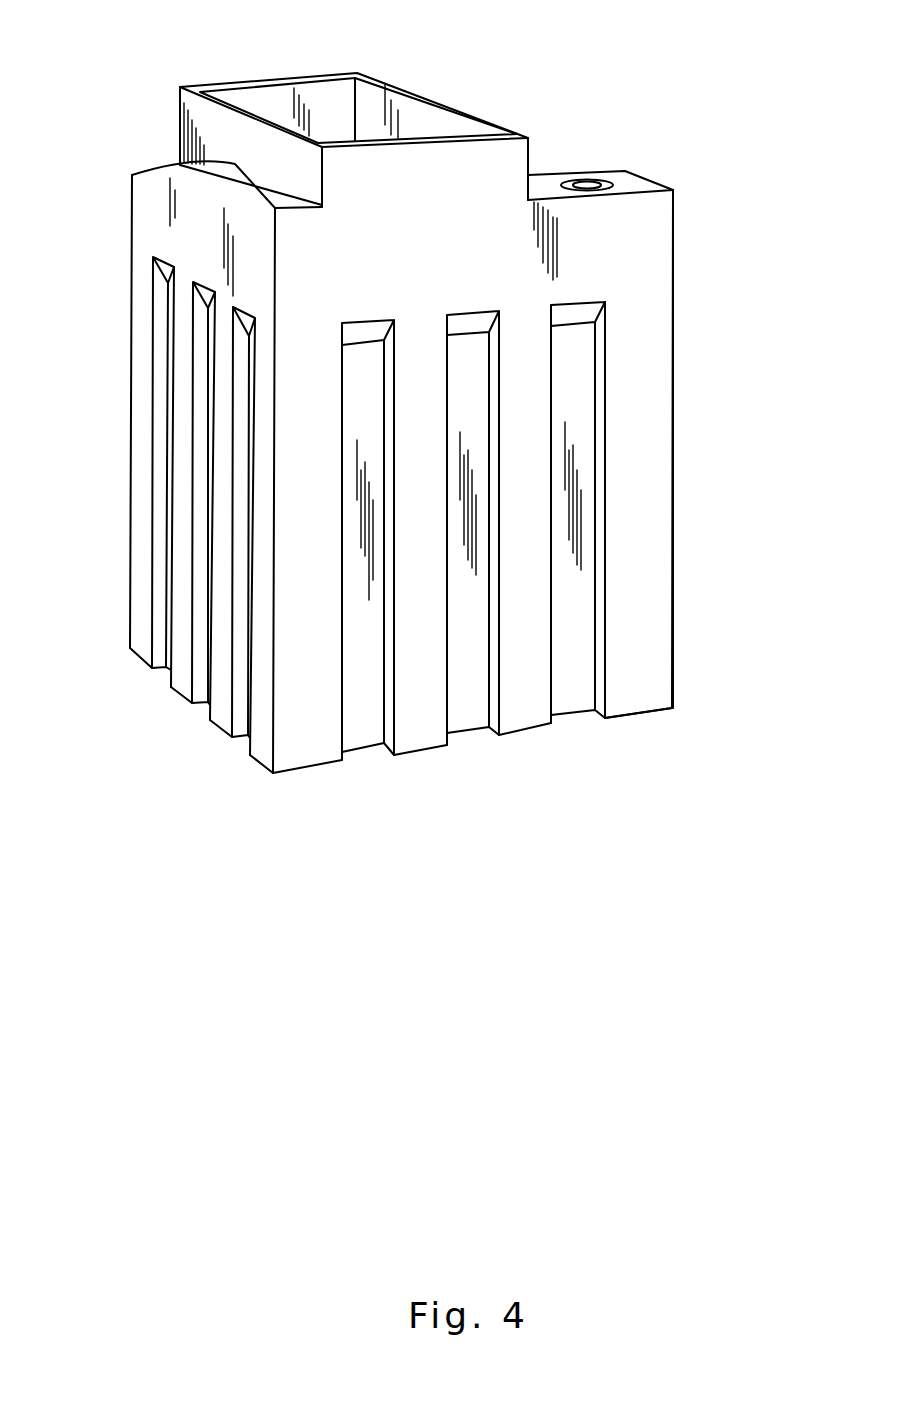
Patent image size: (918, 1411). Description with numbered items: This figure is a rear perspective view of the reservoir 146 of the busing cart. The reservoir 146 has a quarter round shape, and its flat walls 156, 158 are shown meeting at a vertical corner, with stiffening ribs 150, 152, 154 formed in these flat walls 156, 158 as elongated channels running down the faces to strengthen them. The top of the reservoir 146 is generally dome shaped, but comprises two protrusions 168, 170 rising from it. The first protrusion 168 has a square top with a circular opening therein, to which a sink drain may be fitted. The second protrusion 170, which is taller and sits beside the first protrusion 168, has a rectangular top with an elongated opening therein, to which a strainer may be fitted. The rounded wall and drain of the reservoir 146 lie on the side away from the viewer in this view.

The reservoir 146 is at (403, 222).
The stiffening rib 150 is at (362, 732).
The stiffening rib 152 is at (468, 717).
The stiffening rib 154 is at (572, 700).
The flat wall 156 is at (660, 386).
The flat wall 158 is at (145, 223).
The first protrusion 168 is at (634, 180).
The second protrusion 170 is at (330, 95).